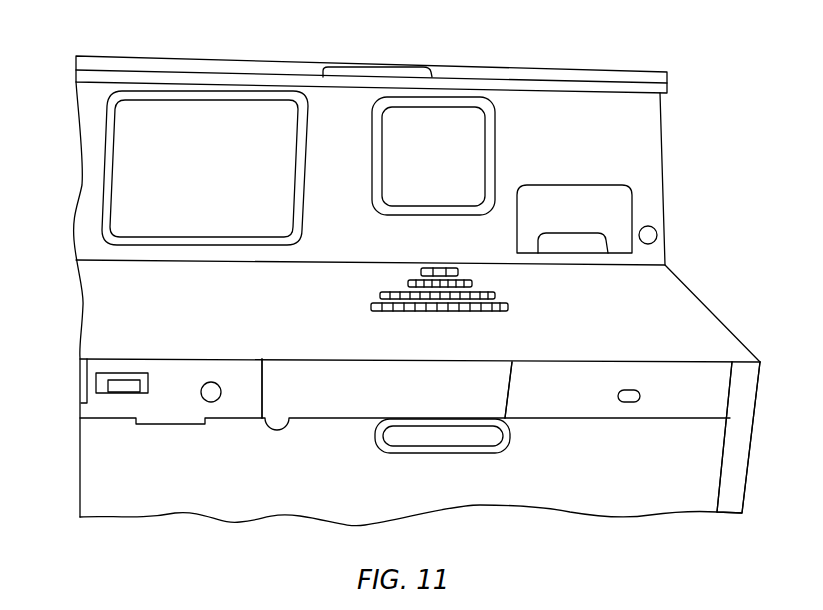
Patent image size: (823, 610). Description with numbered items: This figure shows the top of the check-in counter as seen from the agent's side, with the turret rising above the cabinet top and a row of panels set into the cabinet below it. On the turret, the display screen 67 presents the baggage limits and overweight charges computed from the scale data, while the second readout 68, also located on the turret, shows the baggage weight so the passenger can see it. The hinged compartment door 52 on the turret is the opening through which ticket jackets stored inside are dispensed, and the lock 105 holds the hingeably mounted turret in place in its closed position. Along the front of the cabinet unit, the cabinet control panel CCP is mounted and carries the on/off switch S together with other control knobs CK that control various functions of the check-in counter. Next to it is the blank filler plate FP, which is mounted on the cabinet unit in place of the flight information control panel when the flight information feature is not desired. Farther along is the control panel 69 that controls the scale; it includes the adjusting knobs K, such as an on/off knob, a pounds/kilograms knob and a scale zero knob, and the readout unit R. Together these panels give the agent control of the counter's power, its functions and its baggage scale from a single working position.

The second readout 68 is at (370, 67).
The lock 105 is at (656, 230).
The hinged compartment door 52 is at (548, 218).
The display screen 67 is at (414, 271).
The on/off switch S is at (98, 389).
The control knobs CK is at (213, 381).
The cabinet control panel CCP is at (243, 398).
The blank filler plate FP is at (442, 416).
The control panel 69 is at (585, 399).
The adjusting knobs K is at (638, 392).
The readout unit R is at (713, 388).